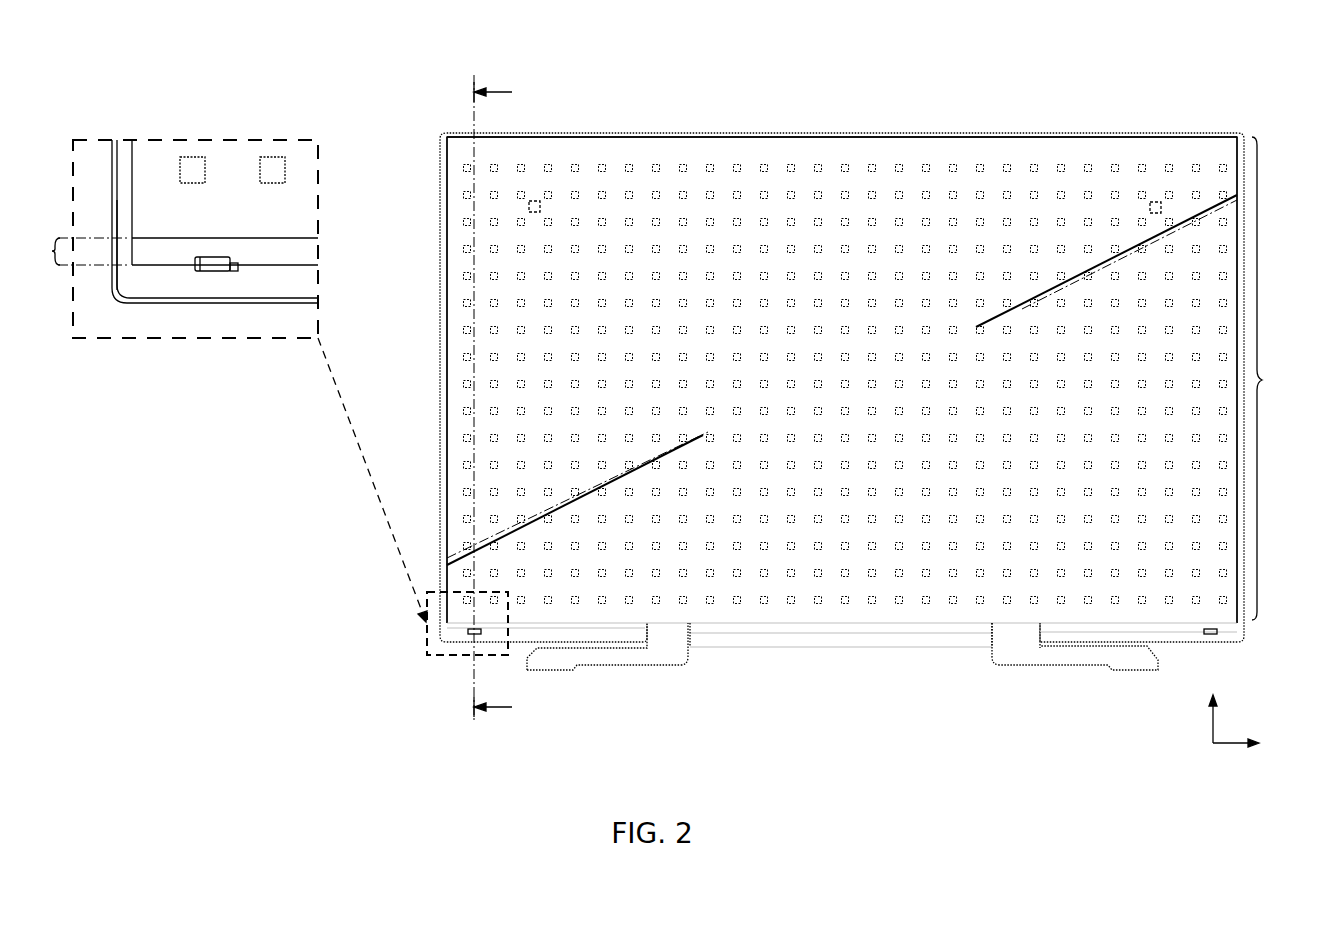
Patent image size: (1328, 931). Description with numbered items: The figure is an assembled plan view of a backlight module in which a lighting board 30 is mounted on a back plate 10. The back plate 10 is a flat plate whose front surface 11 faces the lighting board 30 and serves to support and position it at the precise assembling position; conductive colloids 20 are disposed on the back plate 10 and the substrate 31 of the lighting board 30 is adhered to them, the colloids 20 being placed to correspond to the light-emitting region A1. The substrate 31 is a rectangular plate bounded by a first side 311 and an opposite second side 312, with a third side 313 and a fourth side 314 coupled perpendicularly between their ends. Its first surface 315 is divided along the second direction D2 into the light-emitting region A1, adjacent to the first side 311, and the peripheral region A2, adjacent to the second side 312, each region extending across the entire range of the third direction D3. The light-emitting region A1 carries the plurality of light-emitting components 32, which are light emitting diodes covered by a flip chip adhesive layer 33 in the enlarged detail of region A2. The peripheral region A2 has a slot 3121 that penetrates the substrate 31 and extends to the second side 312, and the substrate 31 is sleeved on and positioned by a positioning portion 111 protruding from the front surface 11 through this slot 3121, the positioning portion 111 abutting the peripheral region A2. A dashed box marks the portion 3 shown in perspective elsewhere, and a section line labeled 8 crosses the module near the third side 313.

The back plate 10 is at (708, 134).
The front surface 11 is at (783, 641).
The conductive colloids 20 is at (534, 201).
The lighting board 30 is at (1017, 157).
The substrate 31 is at (308, 251).
The light-emitting components 32 is at (628, 152).
The flip chip adhesive layer 33 is at (310, 216).
The positioning portion 111 is at (213, 272).
The first side 311 is at (843, 135).
The second side 312 is at (867, 633).
The third side 313 is at (447, 360).
The fourth side 314 is at (1238, 286).
The first surface 315 is at (952, 628).
The slot 3121 is at (195, 263).
The portion 3 is at (425, 624).
The section line of FIG. 8 is at (505, 400).
The light-emitting region A1 is at (1273, 378).
The peripheral region A2 is at (169, 239).
The second direction D2 is at (1220, 707).
The third direction D3 is at (1255, 744).